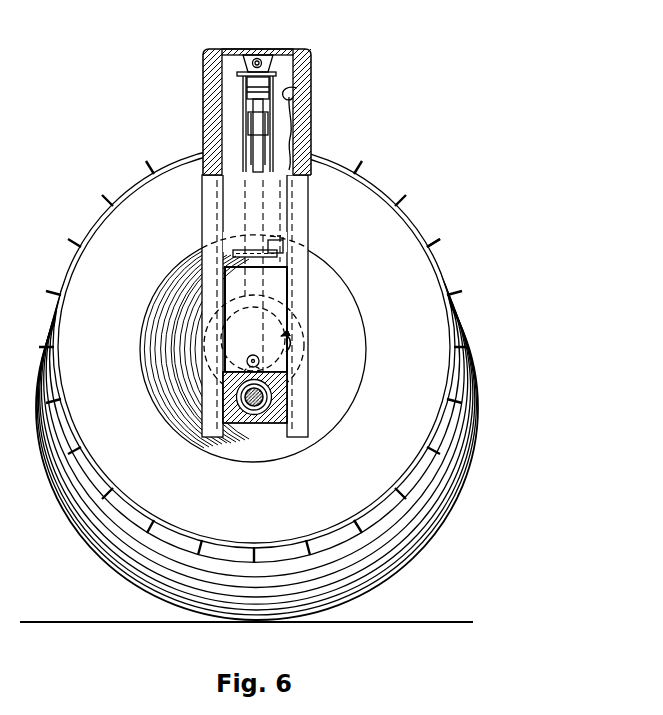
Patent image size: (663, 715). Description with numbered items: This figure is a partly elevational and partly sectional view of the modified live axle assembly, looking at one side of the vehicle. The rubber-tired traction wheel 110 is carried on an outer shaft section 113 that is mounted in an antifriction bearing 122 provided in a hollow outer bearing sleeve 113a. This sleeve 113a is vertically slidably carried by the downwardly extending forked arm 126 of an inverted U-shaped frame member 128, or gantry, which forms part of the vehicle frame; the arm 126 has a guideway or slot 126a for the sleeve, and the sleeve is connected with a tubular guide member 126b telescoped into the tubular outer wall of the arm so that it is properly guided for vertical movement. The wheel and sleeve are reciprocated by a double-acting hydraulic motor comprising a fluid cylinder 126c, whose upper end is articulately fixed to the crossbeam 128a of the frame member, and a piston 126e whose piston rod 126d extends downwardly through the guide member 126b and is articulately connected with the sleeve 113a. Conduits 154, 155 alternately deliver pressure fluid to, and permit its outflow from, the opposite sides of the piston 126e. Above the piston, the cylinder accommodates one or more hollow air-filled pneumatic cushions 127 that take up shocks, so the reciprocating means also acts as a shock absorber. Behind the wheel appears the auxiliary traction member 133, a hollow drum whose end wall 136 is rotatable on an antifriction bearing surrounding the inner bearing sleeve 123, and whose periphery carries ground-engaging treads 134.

The traction wheel 110 is at (462, 473).
The outer section 113 is at (253, 414).
The bearing sleeve 113a is at (277, 404).
The antifriction bearing 122 is at (235, 426).
The inner bearing sleeve 123 is at (289, 306).
The forked arm 126 is at (301, 110).
The guideway 126a is at (287, 350).
The tubular guide member 126b is at (295, 279).
The fluid cylinder 126c is at (240, 135).
The piston rod 126d is at (269, 141).
The piston 126e is at (245, 118).
The pneumatic cushion 127 is at (245, 97).
The frame member 128 is at (290, 41).
The crossbeam 128a is at (231, 51).
The auxiliary traction member 133 is at (397, 183).
The treads 134 is at (407, 205).
The end wall 136 is at (428, 322).
The conduit 154 is at (297, 88).
The conduit 155 is at (297, 124).